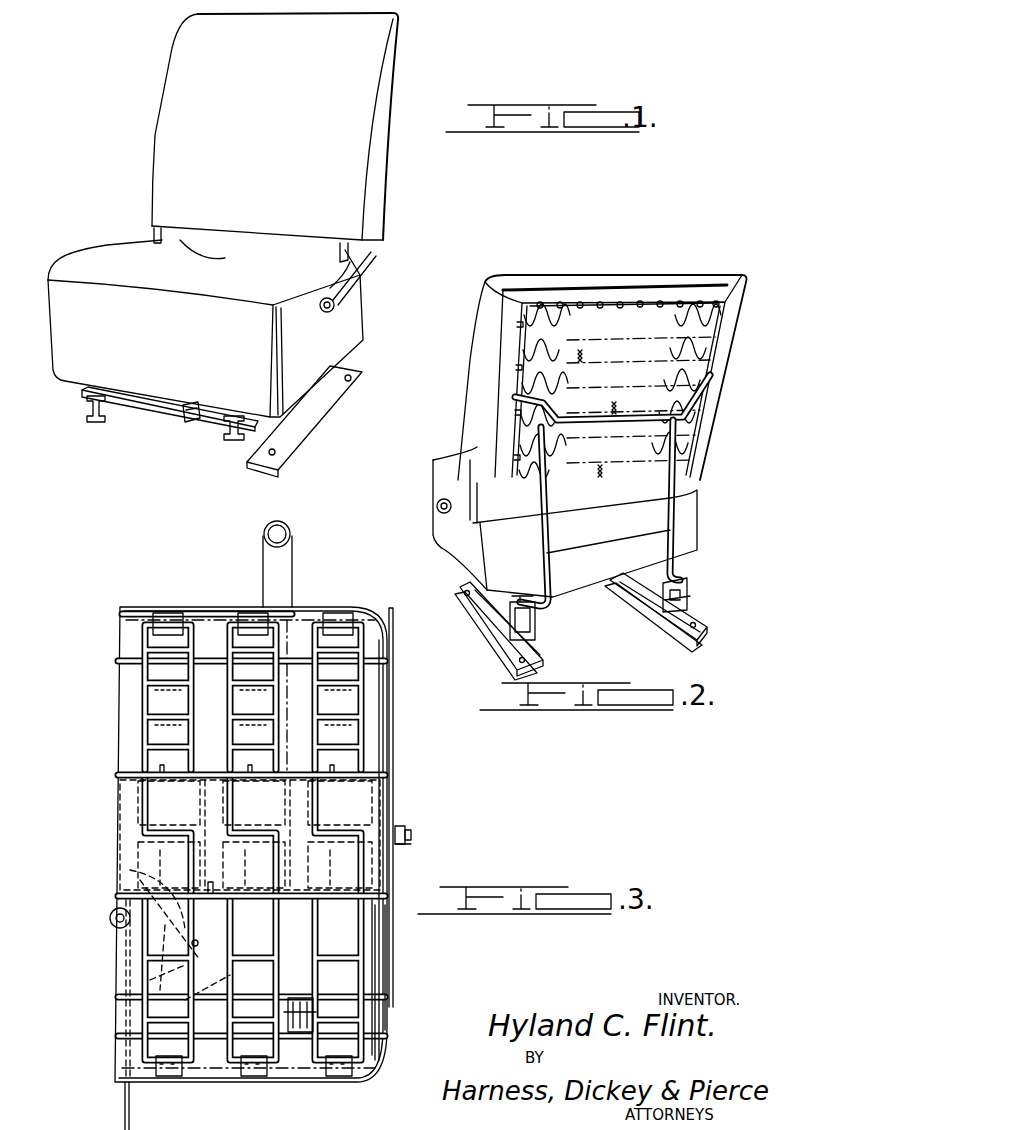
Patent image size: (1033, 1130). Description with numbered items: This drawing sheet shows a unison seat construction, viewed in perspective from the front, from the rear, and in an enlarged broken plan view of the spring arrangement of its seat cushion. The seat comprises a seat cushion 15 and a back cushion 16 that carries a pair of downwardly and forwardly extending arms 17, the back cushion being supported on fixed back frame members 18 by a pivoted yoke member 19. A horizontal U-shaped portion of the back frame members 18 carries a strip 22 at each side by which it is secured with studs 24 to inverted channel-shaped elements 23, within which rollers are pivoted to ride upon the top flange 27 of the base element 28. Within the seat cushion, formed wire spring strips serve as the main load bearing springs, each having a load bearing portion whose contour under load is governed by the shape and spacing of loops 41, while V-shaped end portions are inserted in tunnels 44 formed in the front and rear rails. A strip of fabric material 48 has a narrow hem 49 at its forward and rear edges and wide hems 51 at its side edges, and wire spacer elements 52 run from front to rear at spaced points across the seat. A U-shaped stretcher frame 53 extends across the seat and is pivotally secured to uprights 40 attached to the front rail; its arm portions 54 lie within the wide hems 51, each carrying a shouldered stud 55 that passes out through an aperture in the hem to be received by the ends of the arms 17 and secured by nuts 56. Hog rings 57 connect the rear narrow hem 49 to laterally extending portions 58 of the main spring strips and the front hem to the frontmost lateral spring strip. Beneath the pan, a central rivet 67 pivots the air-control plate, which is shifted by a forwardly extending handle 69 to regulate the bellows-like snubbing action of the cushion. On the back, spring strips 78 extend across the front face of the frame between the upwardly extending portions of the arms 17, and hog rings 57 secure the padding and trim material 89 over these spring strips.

In FIG. 1, the seat cushion 15 is at (335, 343).
In FIG. 3, the seat cushion 15 is at (297, 622).
In FIG. 1, the back cushion 16 is at (382, 178).
In FIG. 1, the arms 17 is at (150, 233).
In FIG. 2, the arms 17 is at (455, 518).
In FIG. 3, the arms 17 is at (394, 613).
In FIG. 1, the back frame members 18 is at (225, 258).
In FIG. 2, the back frame members 18 is at (606, 548).
In FIG. 3, the back frame members 18 is at (261, 558).
In FIG. 2, the yoke member 19 is at (705, 405).
In FIG. 1, the strip 22 is at (200, 438).
In FIG. 2, the strip 22 is at (680, 577).
In FIG. 1, the channel-shaped elements 23 is at (262, 415).
In FIG. 2, the channel-shaped elements 23 is at (690, 590).
In FIG. 2, the studs 24 is at (510, 610).
In FIG. 2, the top flange 27 is at (662, 614).
In FIG. 1, the base element 28 is at (250, 452).
In FIG. 2, the base element 28 is at (672, 618).
In FIG. 3, the uprights 40 is at (300, 1034).
In FIG. 3, the loops 41 is at (383, 910).
In FIG. 3, the tunnels 44 is at (338, 622).
In FIG. 3, the strip of fabric material 48 is at (360, 792).
In FIG. 3, the narrow hem 49 is at (335, 762).
In FIG. 3, the wide hems 51 is at (388, 825).
In FIG. 3, the wire spacer elements 52 is at (395, 755).
In FIG. 3, the stretcher frame 53 is at (390, 952).
In FIG. 3, the arm portions 54 is at (390, 925).
In FIG. 2, the shouldered stud 55 is at (440, 505).
In FIG. 3, the shouldered stud 55 is at (412, 832).
In FIG. 3, the nuts 56 is at (404, 845).
In FIG. 2, the hog rings 57 is at (518, 327).
In FIG. 3, the hog rings 57 is at (160, 768).
In FIG. 3, the laterally extending portions 58 is at (255, 770).
In FIG. 3, the central rivet 67 is at (110, 918).
In FIG. 1, the handle 69 is at (183, 418).
In FIG. 3, the handle 69 is at (124, 1110).
In FIG. 2, the spring strips 78 is at (550, 315).
In FIG. 2, the trim material 89 is at (478, 392).